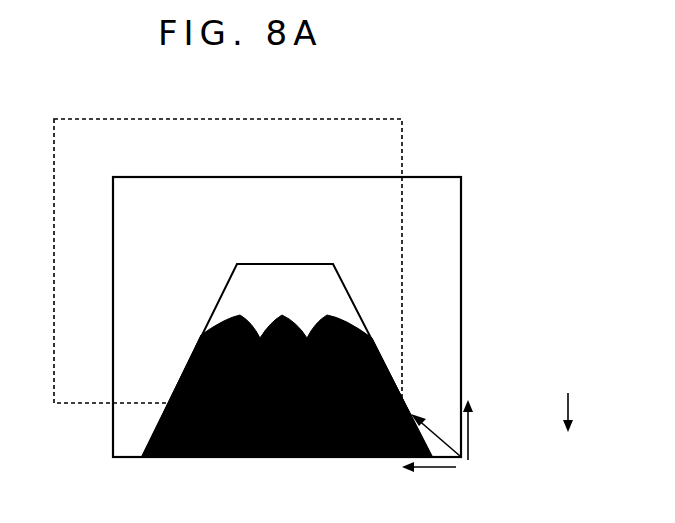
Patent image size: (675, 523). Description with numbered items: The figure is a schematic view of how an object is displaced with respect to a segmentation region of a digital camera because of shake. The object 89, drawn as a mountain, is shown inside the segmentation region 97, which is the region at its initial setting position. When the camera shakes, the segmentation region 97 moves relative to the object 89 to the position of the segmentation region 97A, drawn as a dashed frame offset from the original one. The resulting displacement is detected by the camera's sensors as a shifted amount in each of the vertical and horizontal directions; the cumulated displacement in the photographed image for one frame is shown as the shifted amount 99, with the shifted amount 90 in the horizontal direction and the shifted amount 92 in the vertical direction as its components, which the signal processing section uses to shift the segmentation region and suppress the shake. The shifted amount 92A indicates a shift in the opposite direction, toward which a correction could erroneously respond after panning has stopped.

The segmentation region 97A is at (313, 119).
The segmentation region 97 is at (461, 288).
The object 89 is at (262, 459).
The shifted amount 99 is at (443, 438).
The shifted amount in the horizontal direction 90 is at (429, 482).
The shifted amount in the vertical direction 92 is at (468, 437).
The shifted amount 92A is at (595, 413).